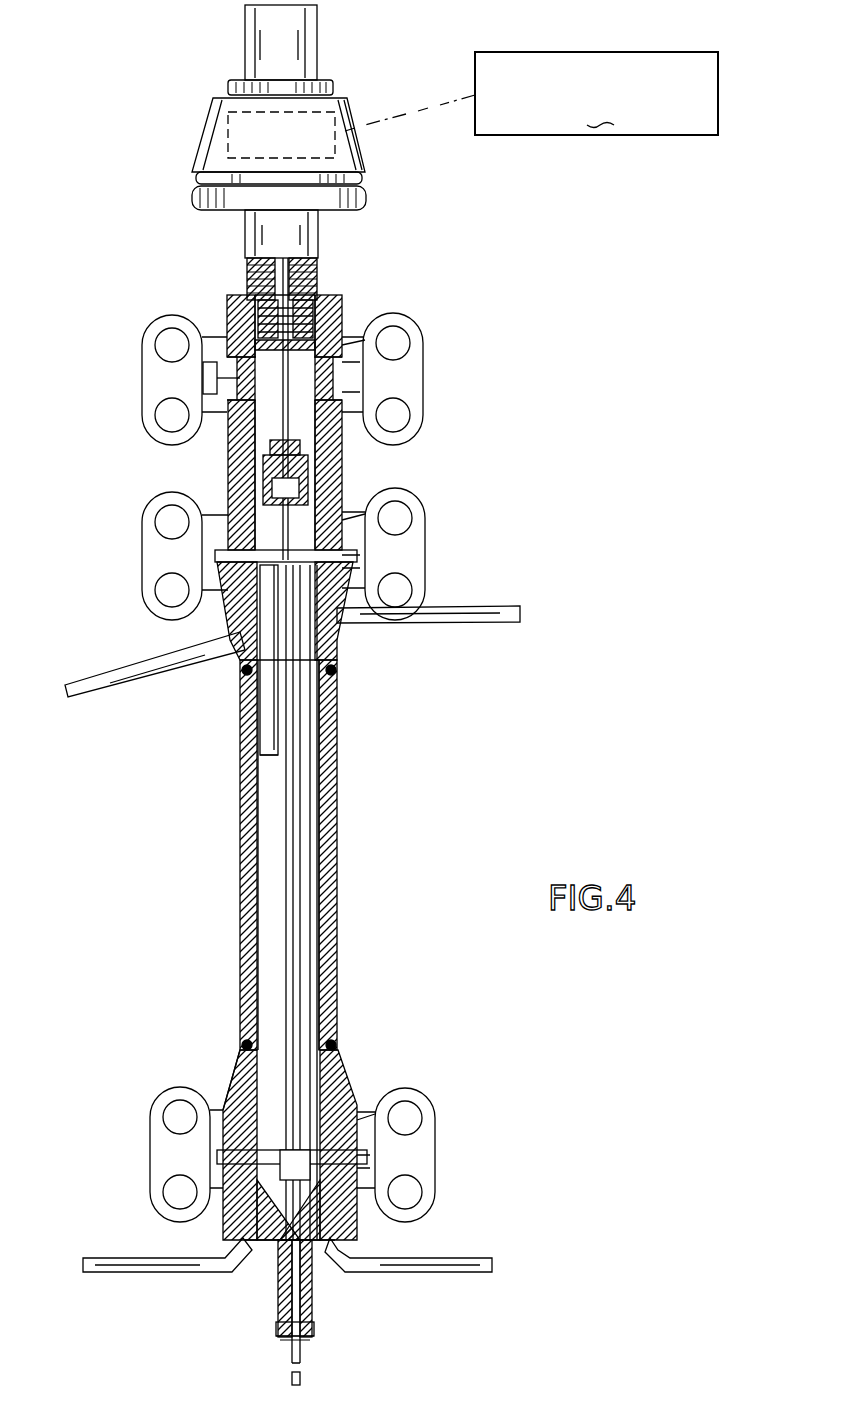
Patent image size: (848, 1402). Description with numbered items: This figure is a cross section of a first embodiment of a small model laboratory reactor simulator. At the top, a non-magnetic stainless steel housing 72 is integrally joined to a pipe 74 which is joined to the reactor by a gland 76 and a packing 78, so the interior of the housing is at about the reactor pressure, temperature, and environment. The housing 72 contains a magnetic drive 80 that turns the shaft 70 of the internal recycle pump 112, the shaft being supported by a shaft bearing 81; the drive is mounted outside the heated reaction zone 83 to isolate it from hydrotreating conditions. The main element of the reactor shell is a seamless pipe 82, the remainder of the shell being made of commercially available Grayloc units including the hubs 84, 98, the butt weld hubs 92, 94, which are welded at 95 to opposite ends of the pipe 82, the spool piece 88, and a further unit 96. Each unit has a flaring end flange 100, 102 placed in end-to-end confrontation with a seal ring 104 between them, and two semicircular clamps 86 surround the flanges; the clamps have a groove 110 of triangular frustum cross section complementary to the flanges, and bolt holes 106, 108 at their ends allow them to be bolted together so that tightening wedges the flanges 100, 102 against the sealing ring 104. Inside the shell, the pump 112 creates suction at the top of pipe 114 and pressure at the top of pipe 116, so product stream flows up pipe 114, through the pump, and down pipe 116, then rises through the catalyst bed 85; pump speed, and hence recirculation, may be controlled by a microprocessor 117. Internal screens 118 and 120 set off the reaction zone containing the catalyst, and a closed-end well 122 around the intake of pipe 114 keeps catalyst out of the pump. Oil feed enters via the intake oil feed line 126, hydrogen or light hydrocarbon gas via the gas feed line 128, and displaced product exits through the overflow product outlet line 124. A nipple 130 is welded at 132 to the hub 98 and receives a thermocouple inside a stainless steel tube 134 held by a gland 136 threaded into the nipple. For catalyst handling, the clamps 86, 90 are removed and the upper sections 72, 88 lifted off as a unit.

The shaft 70 is at (248, 278).
The housing 72 is at (352, 130).
The pipe 74 is at (322, 268).
The gland 76 is at (322, 292).
The packing 78 is at (322, 312).
The magnetic drive 80 is at (360, 106).
The shaft bearing 81 is at (258, 320).
The seamless pipe 82 is at (337, 732).
The reaction zone 83 is at (270, 862).
The hub 84 is at (342, 305).
The catalyst bed 85 is at (275, 932).
The semicircular clamp 86 is at (423, 392).
The spool piece 88 is at (342, 455).
The Grayloc clamp 90 is at (427, 540).
The butt weld hub 92 is at (345, 622).
The butt weld hub 94 is at (340, 1082).
The weld 95 is at (337, 672).
The Grayloc unit 96 is at (437, 1105).
The hub 98 is at (352, 1235).
The flaring end flange 100 is at (345, 350).
The flaring end flange 102 is at (346, 394).
The seal ring 104 is at (350, 362).
The bolt hole 106 is at (165, 345).
The bolt hole 108 is at (165, 415).
The groove 110 is at (203, 380).
The internal recycle pump 112 is at (308, 490).
The pipe 114 is at (268, 732).
The pipe 116 is at (305, 762).
The microprocessor 117 is at (531, 93).
The internal screen 118 is at (337, 662).
The internal screen 120 is at (232, 1098).
The well 122 is at (262, 748).
The overflow product outlet line 124 is at (172, 664).
The intake oil feed line 126 is at (112, 1274).
The gas feed line 128 is at (440, 1274).
The nipple 130 is at (278, 1312).
The weld 132 is at (258, 1250).
The stainless steel tube 134 is at (290, 842).
The gland 136 is at (284, 1346).